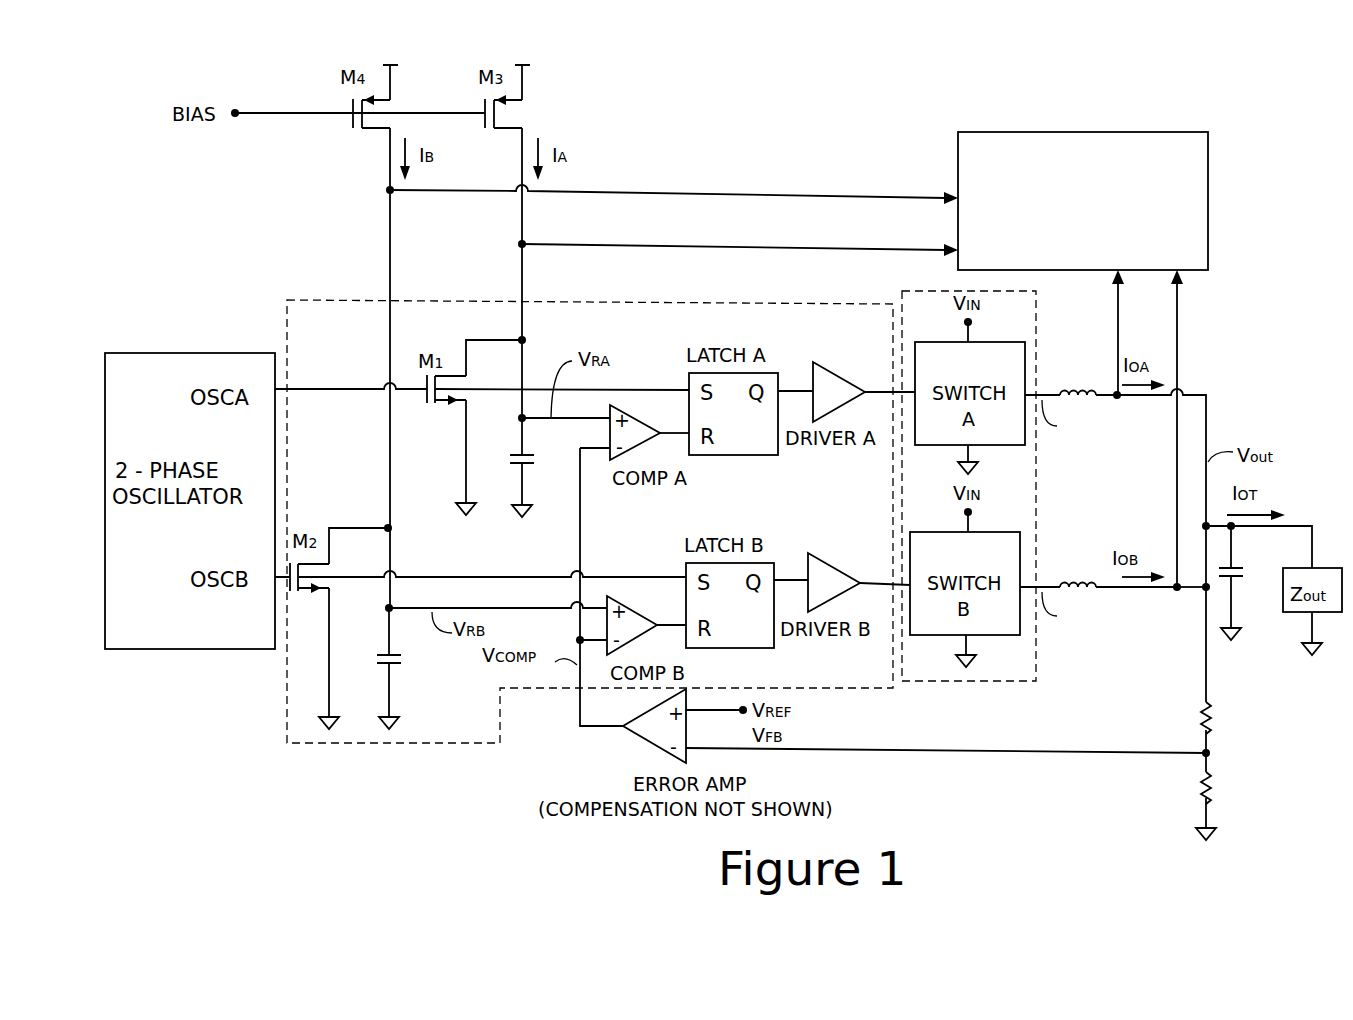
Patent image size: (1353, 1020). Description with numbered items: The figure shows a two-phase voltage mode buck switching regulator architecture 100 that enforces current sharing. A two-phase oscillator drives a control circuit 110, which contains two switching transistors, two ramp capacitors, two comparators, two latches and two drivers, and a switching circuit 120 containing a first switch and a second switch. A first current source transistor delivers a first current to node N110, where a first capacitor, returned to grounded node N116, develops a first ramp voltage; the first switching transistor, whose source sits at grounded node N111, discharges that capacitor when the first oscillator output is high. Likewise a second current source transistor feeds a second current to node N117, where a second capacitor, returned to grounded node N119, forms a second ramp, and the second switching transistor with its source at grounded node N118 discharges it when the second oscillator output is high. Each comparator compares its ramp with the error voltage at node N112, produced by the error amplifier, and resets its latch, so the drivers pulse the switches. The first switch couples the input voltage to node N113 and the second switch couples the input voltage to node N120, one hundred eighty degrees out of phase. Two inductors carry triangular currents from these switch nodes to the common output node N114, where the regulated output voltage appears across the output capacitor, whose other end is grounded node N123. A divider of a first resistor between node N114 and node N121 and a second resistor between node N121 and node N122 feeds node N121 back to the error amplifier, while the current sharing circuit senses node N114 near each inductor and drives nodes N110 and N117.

The 2-phase regulator architecture 100 is at (1108, 124).
The control circuit 110 is at (660, 303).
The switching circuit 120 is at (1040, 320).
The node N110 is at (524, 272).
The node N111 is at (465, 447).
The node N112 is at (581, 526).
The node N113 is at (1042, 393).
The node N114 is at (1208, 410).
The node N116 is at (517, 487).
The node N117 is at (387, 487).
The node N118 is at (329, 694).
The node N119 is at (389, 704).
The node N120 is at (1042, 585).
The node N121 is at (1204, 750).
The node N122 is at (1204, 818).
The node N123 is at (1233, 613).